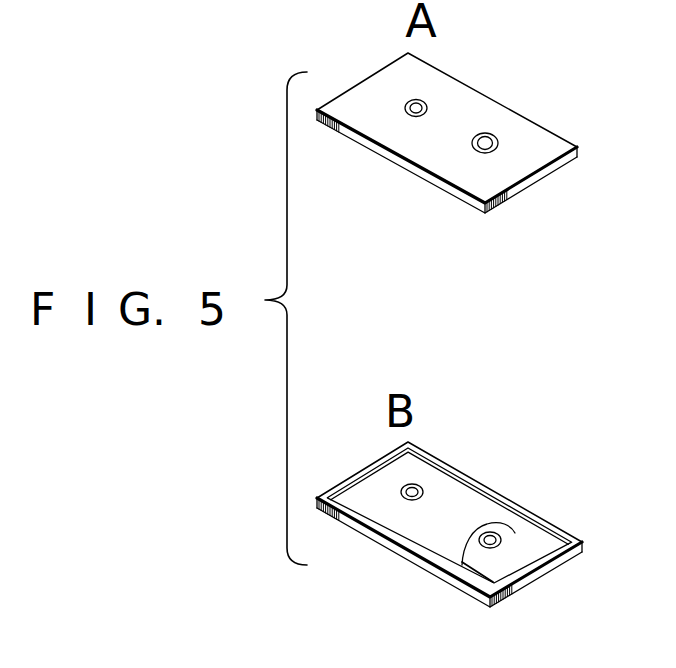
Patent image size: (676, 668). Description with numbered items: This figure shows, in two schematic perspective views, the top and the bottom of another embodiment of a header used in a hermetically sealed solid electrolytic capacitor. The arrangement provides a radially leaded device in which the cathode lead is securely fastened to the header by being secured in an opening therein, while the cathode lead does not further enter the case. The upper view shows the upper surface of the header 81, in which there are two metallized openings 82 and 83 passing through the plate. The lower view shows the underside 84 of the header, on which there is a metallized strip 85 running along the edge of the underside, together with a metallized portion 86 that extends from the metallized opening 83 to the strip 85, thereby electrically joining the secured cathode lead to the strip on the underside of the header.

The header 81 is at (488, 110).
The metallized opening 82 is at (419, 100).
The metallized opening 83 is at (496, 139).
The underside 84 is at (473, 503).
The metallized strip 85 is at (344, 486).
The metallized portion 86 is at (530, 563).